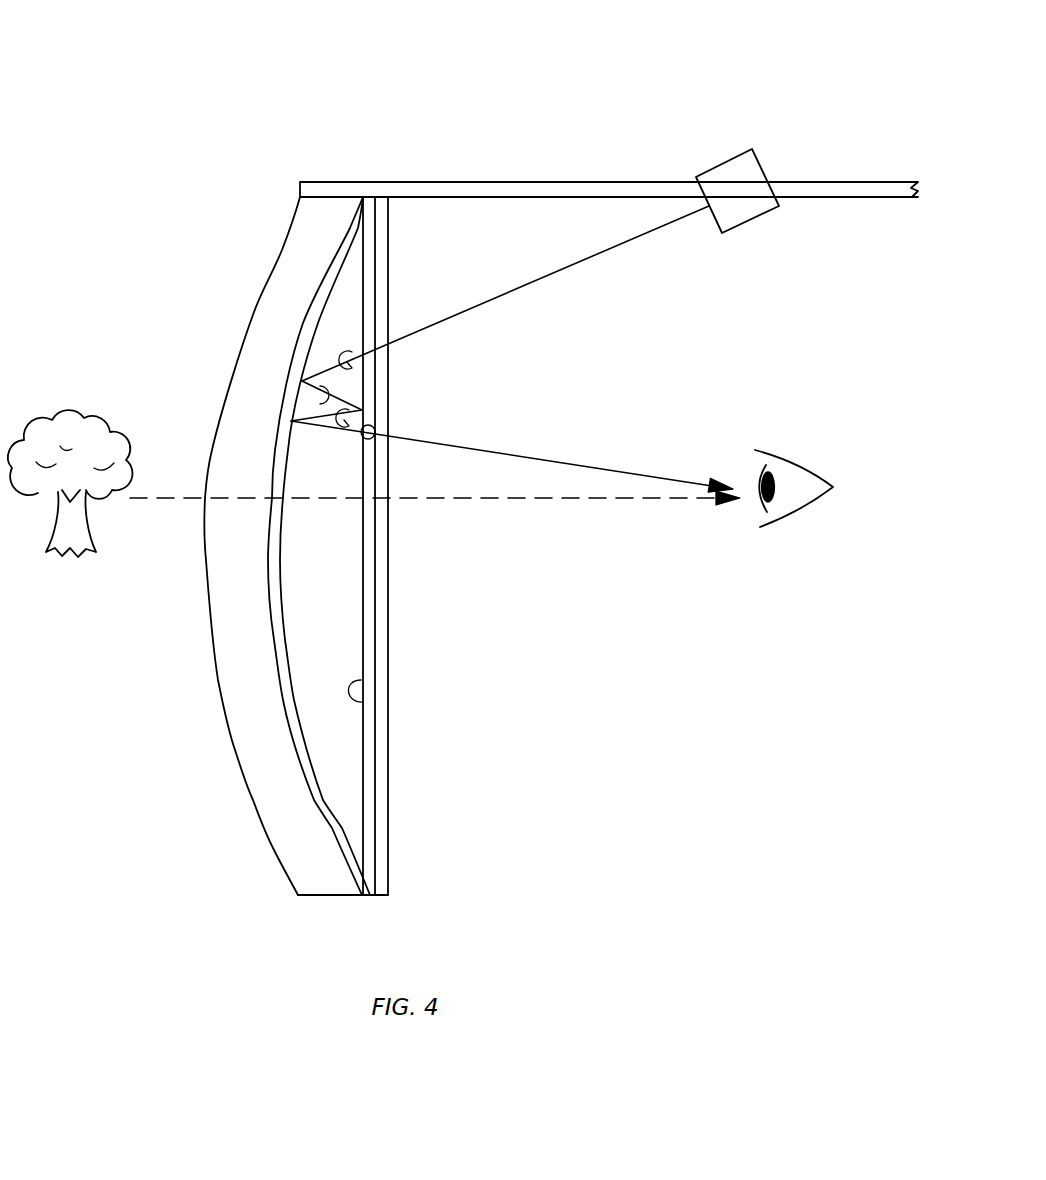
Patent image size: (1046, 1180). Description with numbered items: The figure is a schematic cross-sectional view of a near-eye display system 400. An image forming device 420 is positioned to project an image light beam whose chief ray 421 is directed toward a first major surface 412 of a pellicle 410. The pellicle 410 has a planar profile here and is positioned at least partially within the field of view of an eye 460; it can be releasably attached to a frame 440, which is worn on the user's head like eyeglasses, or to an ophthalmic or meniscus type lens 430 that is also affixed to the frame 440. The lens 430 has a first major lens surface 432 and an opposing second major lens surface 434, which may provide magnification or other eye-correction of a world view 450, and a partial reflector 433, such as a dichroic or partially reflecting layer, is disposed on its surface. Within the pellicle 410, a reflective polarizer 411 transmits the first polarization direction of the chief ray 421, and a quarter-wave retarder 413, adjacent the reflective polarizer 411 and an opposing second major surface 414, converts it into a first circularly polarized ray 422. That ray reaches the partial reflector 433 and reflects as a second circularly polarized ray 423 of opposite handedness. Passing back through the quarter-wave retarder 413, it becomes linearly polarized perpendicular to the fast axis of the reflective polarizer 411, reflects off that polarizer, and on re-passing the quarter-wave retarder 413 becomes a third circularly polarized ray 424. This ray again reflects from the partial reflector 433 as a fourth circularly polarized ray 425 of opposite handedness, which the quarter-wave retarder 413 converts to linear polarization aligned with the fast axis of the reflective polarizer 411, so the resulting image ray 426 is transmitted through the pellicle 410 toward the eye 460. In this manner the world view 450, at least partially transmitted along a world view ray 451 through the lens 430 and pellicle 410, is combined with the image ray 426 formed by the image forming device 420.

The near-eye display system 400 is at (190, 67).
The pellicle 410 is at (395, 787).
The reflective polarizer 411 is at (382, 657).
The first major surface 412 is at (388, 737).
The quarter-wave retarder 413 is at (368, 616).
The second major surface 414 is at (363, 702).
The image forming device 420 is at (757, 157).
The chief ray 421 is at (566, 268).
The first circularly polarized ray 422 is at (327, 375).
The second circularly polarized ray 423 is at (340, 400).
The third circularly polarized ray 424 is at (317, 417).
The fourth circularly polarized ray 425 is at (332, 428).
The image ray 426 is at (574, 465).
The ophthalmic or meniscus type lens 430 is at (300, 226).
The first major lens surface 432 is at (322, 776).
The partial reflector 433 is at (333, 828).
The second major lens surface 434 is at (255, 800).
The frame 440 is at (578, 186).
The world view 450 is at (82, 388).
The world view ray 451 is at (609, 505).
The eye 460 is at (792, 467).